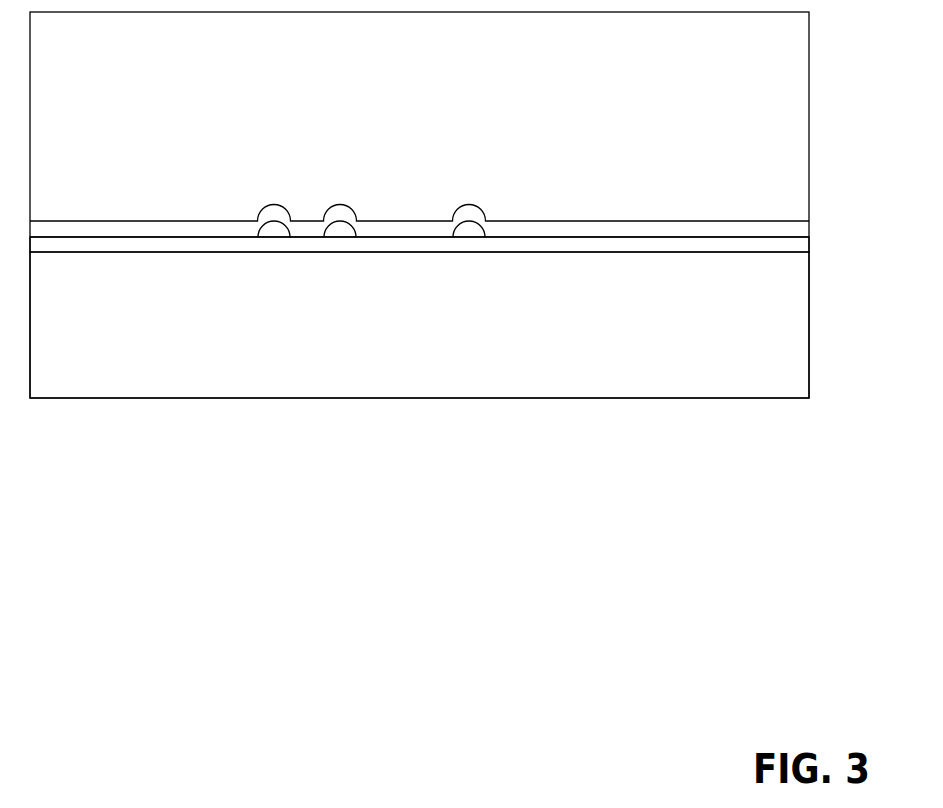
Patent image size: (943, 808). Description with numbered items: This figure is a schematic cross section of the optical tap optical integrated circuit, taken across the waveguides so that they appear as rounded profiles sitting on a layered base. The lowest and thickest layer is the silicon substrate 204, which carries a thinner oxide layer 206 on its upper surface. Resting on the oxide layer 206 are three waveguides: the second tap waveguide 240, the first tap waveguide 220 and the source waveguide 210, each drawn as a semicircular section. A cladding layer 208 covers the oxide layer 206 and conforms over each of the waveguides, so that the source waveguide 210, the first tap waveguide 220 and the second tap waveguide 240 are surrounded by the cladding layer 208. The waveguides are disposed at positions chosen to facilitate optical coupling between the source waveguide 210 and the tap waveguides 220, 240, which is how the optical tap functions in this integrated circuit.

The silicon substrate 204 is at (671, 359).
The oxide layer 206 is at (707, 247).
The cladding layer 208 is at (707, 225).
The source waveguide 210 is at (470, 230).
The first tap waveguide 220 is at (340, 232).
The second tap waveguide 240 is at (275, 232).